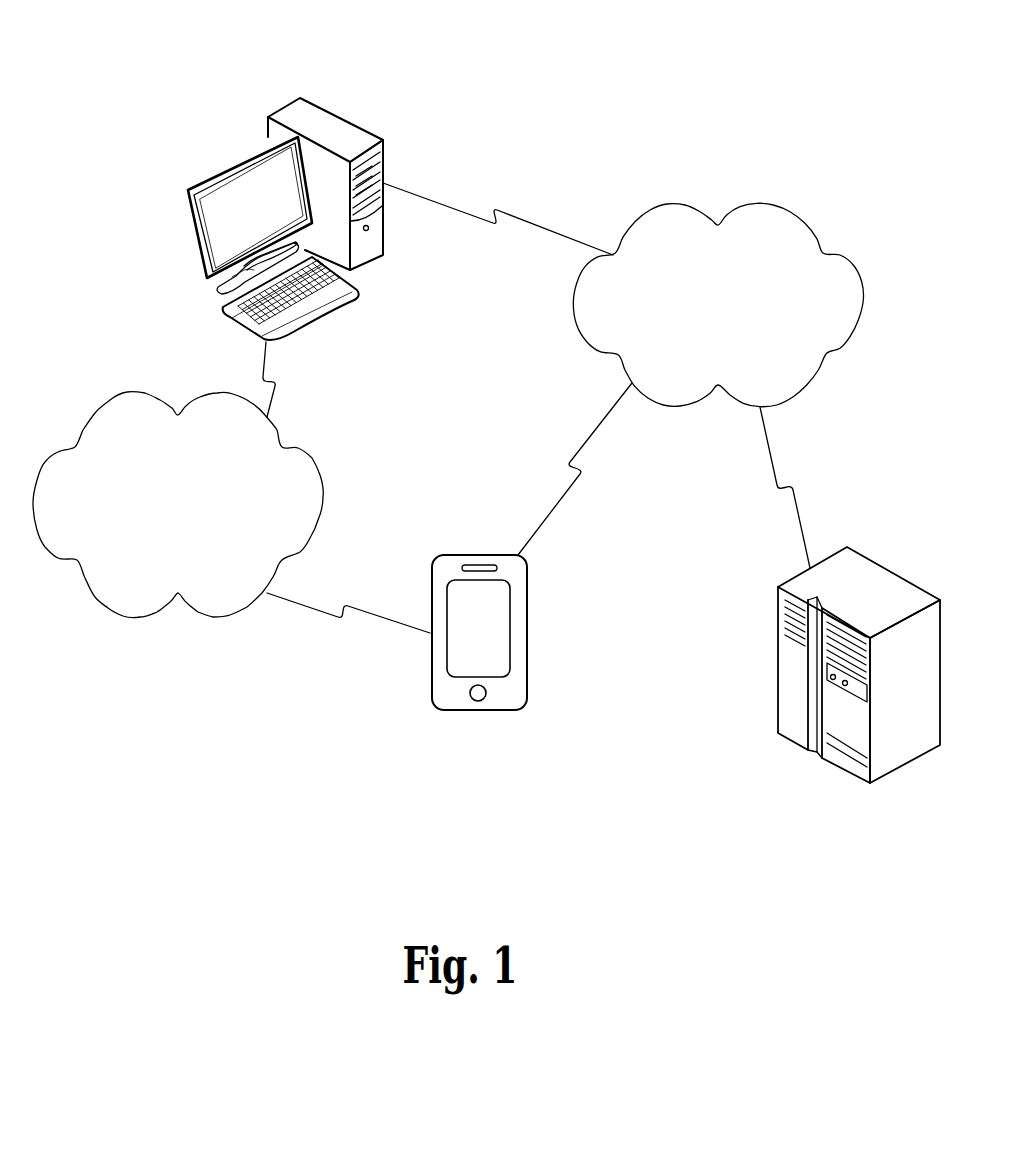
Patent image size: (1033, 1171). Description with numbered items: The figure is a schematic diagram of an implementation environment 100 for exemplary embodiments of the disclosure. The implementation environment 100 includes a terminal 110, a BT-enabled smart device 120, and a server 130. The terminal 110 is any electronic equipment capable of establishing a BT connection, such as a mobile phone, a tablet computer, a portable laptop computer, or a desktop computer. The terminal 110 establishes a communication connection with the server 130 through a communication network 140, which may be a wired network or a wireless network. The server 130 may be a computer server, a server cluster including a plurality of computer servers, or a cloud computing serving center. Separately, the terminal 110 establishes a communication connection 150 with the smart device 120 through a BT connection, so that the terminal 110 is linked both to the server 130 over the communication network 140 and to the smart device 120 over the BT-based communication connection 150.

The implementation environment 100 is at (682, 105).
The terminal 110 is at (357, 127).
The BT-enabled smart device 120 is at (527, 635).
The server 130 is at (863, 553).
The communication network 140 is at (823, 255).
The communication connection 150 is at (322, 493).